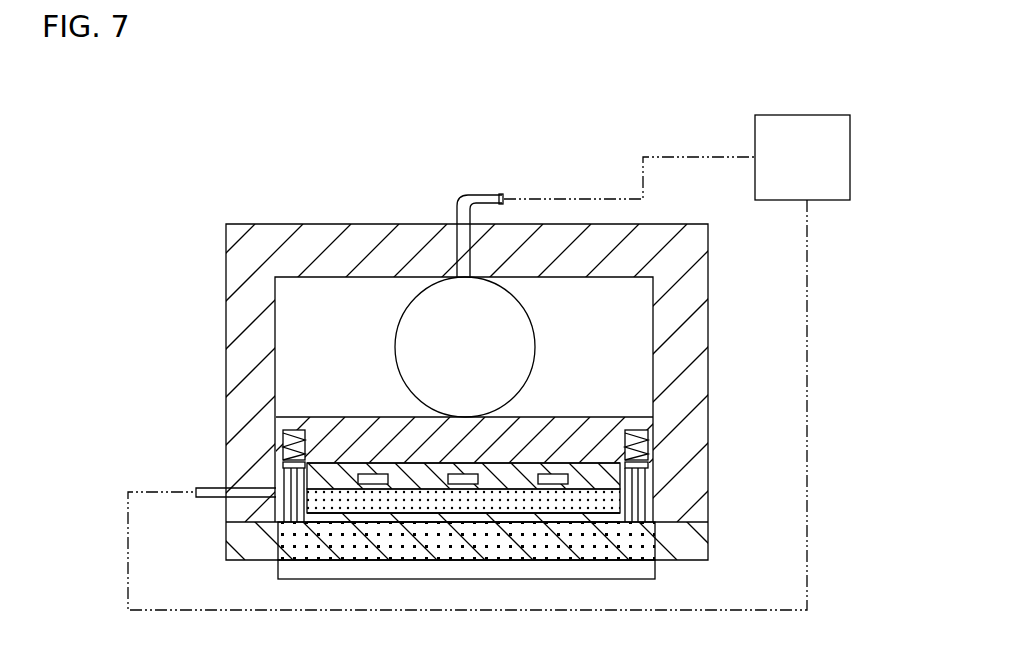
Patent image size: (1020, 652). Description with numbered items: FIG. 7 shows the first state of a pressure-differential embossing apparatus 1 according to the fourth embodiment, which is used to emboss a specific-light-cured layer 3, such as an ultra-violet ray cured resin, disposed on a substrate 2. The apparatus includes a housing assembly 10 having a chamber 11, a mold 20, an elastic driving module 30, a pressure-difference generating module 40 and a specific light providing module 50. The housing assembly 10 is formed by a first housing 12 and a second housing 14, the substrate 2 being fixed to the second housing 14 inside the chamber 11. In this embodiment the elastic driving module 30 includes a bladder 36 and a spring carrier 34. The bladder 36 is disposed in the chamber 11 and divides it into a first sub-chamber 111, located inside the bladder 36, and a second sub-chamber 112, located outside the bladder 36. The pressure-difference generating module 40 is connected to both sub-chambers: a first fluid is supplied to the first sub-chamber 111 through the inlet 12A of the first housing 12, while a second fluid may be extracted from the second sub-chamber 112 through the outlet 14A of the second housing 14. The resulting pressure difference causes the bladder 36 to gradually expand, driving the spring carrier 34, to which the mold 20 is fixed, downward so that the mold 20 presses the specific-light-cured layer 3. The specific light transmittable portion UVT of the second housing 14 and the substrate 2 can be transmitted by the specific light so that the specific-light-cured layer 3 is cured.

The pressure-differential embossing apparatus 1 is at (269, 220).
The housing assembly 10 is at (197, 48).
The chamber 11 is at (358, 48).
The first housing 12 is at (235, 272).
The inlet 12A is at (504, 200).
The second housing 14 is at (255, 556).
The outlet 14A is at (208, 490).
The first sub-chamber 111 is at (455, 315).
The second sub-chamber 112 is at (305, 352).
The mold 20 is at (322, 468).
The substrate 2 is at (597, 520).
The specific-light-cured layer 3 is at (355, 497).
The elastic driving module 30 is at (483, 48).
The spring carrier 34 is at (577, 412).
The bladder 36 is at (405, 305).
The pressure-difference generating module 40 is at (800, 125).
The specific light providing module 50 is at (415, 580).
The specific light transmittable portion UVT is at (508, 560).